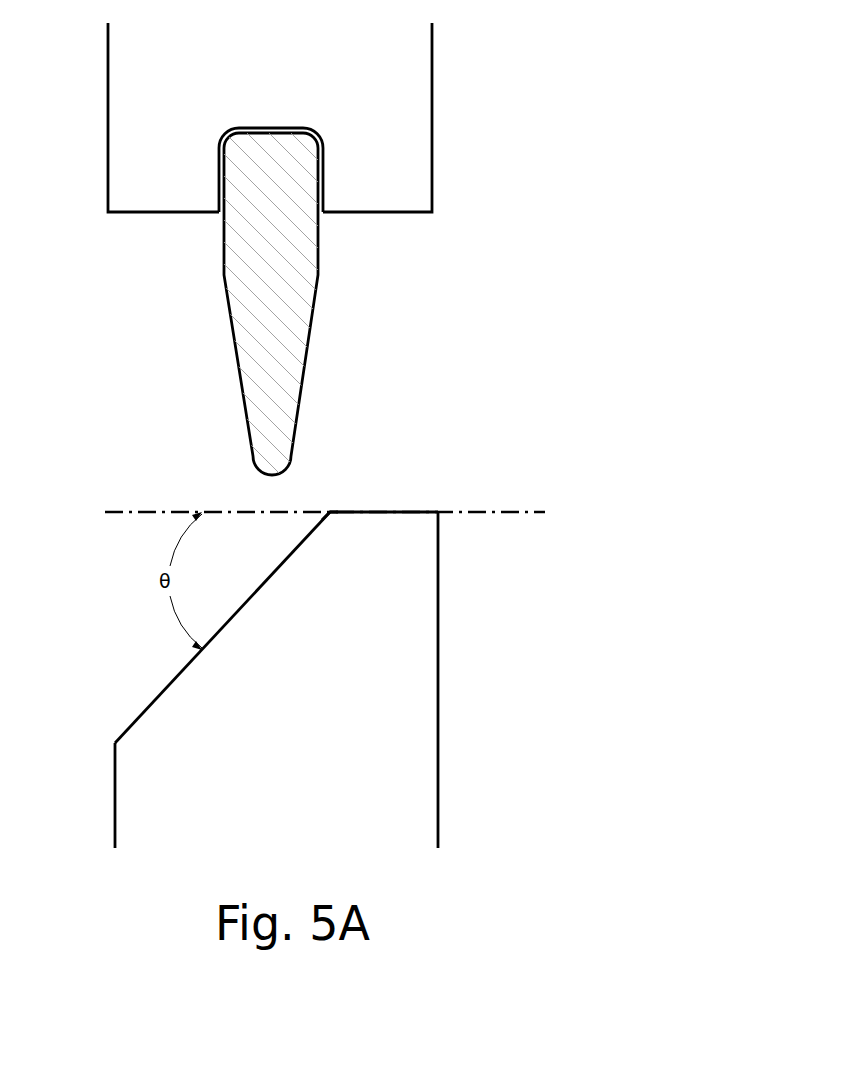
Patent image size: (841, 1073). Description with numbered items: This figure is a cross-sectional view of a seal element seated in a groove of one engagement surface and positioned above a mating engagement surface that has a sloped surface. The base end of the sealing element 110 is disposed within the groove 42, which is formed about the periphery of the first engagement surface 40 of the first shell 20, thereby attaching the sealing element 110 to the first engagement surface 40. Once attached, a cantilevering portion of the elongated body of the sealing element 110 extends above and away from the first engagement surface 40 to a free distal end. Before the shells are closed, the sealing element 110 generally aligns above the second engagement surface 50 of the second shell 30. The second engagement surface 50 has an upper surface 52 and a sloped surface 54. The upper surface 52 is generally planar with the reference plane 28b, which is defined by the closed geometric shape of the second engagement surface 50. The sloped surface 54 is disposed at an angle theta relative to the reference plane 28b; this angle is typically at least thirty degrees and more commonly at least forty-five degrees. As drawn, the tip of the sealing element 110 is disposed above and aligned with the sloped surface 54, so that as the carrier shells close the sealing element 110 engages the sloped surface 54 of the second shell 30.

The first shell 20 is at (256, 77).
The second shell 30 is at (287, 761).
The first engagement surface 40 is at (167, 226).
The groove 42 is at (321, 135).
The second engagement surface 50 is at (338, 495).
The upper surface 52 is at (393, 512).
The sloped surface 54 is at (178, 676).
The reference plane 28b is at (109, 512).
The sealing element 110 is at (288, 282).